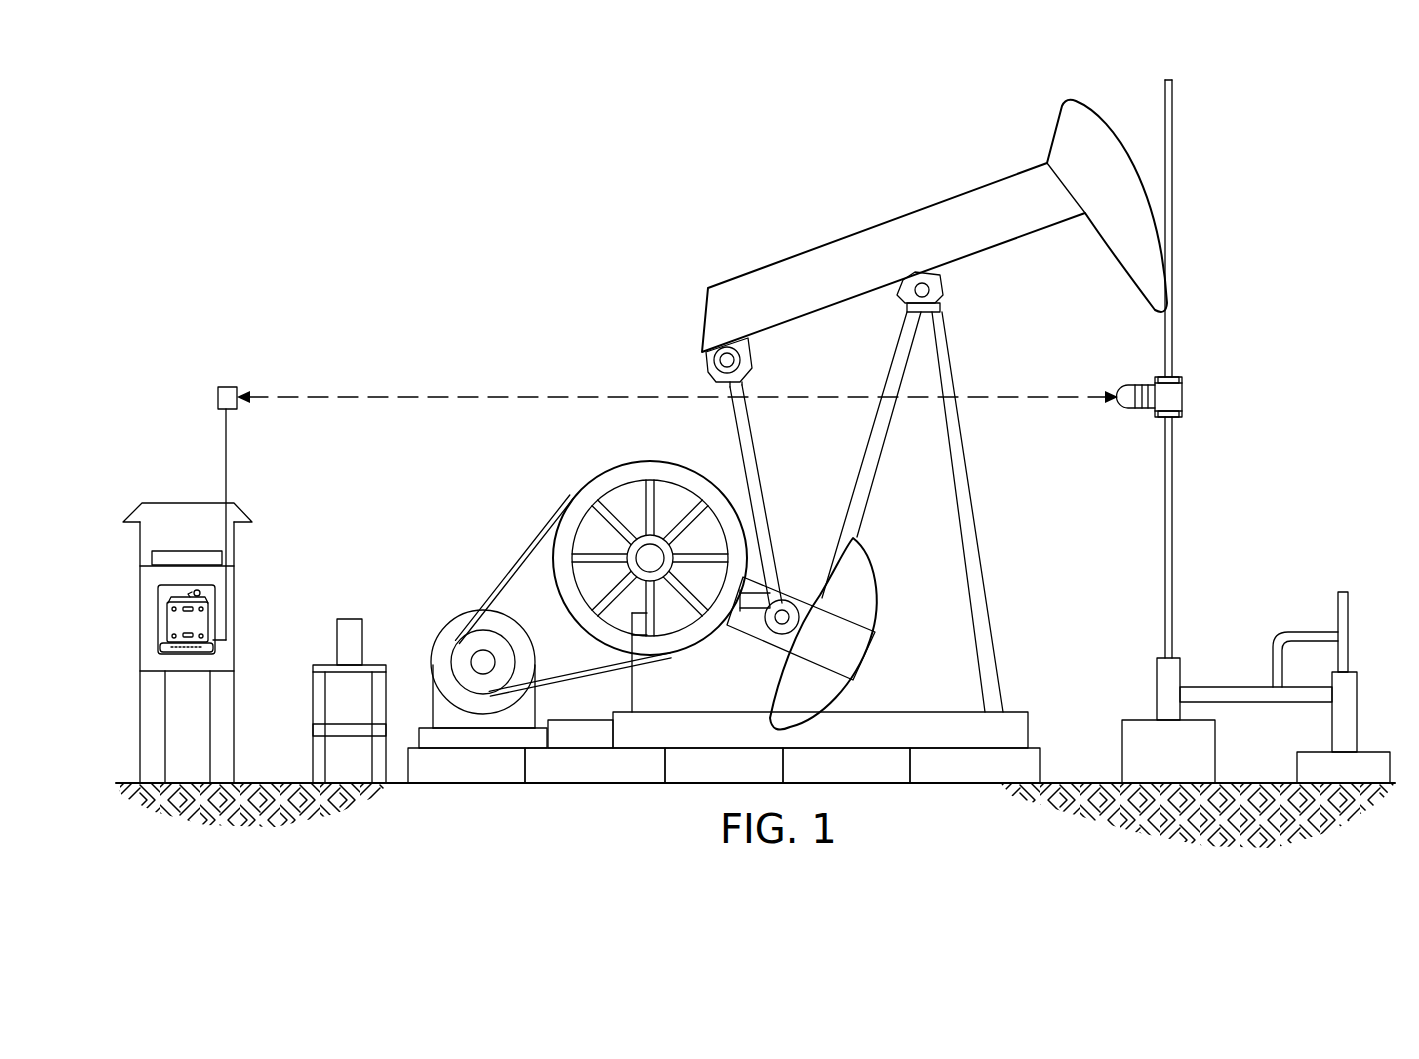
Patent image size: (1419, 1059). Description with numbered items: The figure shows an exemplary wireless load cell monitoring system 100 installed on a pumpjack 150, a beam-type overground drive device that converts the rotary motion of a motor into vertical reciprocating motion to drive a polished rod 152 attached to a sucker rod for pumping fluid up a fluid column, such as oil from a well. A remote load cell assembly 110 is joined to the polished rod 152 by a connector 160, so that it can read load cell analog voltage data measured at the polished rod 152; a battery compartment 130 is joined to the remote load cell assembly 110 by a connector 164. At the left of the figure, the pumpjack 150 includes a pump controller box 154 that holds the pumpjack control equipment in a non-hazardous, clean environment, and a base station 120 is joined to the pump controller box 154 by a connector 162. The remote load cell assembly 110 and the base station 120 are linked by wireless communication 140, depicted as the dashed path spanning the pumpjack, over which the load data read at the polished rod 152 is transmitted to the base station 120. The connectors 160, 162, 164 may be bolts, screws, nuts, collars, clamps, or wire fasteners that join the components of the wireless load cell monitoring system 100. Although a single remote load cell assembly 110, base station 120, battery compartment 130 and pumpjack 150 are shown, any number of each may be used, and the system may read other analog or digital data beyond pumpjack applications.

The wireless load cell monitoring system 100 is at (506, 127).
The remote load cell assembly 110 is at (1194, 395).
The base station 120 is at (150, 631).
The battery compartment 130 is at (1129, 419).
The wireless communication 140 is at (497, 392).
The pumpjack 150 is at (880, 225).
The polished rod 152 is at (1172, 545).
The pump controller box 154 is at (138, 603).
The connector 160 is at (1178, 375).
The connector 162 is at (197, 590).
The connector 164 is at (1137, 383).